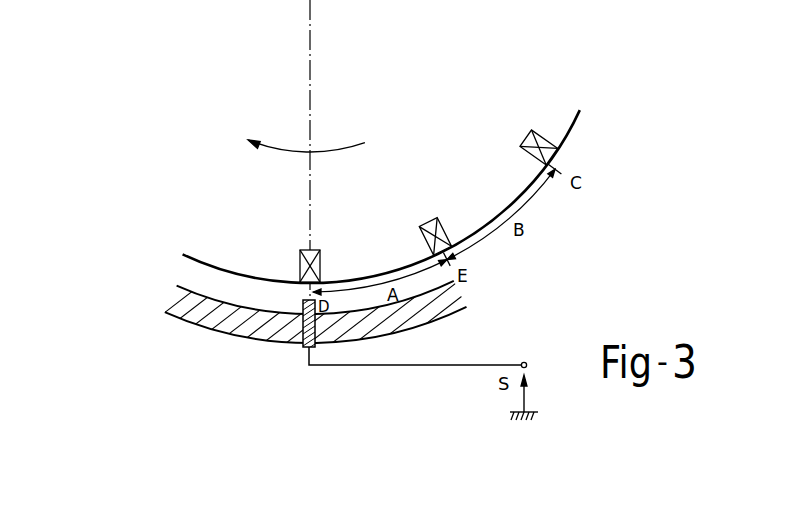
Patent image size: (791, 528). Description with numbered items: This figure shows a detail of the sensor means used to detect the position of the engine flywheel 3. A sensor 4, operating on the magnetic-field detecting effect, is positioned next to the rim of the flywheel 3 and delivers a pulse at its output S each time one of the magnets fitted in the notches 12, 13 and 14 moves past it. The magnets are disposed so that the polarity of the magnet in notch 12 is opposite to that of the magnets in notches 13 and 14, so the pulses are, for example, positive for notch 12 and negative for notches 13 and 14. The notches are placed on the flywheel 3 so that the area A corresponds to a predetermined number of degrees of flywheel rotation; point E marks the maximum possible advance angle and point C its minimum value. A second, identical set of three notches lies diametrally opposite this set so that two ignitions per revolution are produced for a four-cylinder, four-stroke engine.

The engine flywheel 3 is at (581, 116).
The sensor 4 is at (308, 347).
The notch 12 is at (298, 250).
The notch 13 is at (423, 224).
The notch 14 is at (520, 146).